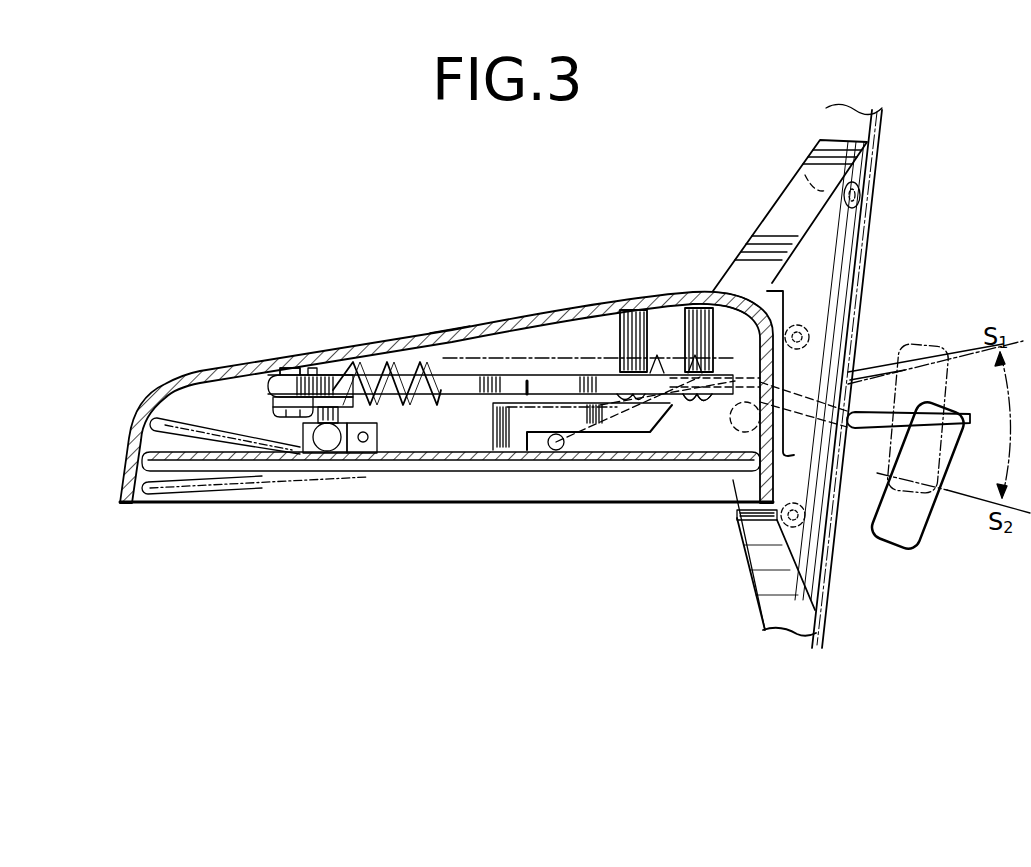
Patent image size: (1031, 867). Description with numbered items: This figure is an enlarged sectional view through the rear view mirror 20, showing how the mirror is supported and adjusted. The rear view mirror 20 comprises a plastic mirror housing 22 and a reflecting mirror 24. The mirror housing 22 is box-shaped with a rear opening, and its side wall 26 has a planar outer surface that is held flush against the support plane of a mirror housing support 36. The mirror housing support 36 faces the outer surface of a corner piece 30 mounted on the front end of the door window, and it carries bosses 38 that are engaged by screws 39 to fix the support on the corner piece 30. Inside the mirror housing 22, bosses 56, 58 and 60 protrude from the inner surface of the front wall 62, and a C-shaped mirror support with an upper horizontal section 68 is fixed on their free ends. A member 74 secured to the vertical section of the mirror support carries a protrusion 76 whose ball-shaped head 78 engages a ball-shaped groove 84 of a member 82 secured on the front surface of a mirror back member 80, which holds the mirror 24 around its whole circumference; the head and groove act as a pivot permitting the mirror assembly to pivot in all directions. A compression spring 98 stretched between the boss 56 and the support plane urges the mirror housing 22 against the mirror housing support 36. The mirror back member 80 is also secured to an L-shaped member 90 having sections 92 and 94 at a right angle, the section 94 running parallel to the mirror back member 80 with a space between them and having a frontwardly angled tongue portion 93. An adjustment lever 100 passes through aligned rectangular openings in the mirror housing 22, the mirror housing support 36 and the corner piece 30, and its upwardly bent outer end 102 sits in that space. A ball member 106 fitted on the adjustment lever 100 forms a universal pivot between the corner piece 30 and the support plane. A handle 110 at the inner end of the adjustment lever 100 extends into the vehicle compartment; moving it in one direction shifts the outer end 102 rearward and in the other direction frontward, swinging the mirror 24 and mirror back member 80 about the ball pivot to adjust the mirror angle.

The rear view mirror 20 is at (682, 281).
The mirror housing 22 is at (557, 305).
The reflecting mirror 24 is at (472, 470).
The side wall 26 is at (800, 452).
The corner piece 30 is at (863, 120).
The mirror housing support 36 is at (787, 203).
The bosses 38 is at (800, 163).
The screws 39 is at (860, 197).
The boss 56 is at (293, 368).
The boss 58 is at (700, 296).
The boss 60 is at (630, 330).
The front wall 62 is at (463, 328).
The upper horizontal section 68 is at (435, 380).
The member 74 is at (320, 413).
The protrusion 76 is at (340, 413).
The ball-shaped head 78 is at (328, 440).
The mirror back member 80 is at (463, 452).
The member 82 is at (372, 448).
The ball-shaped groove 84 is at (335, 447).
The member 90 is at (527, 381).
The section 92 is at (500, 430).
The tongue portion 93 is at (653, 413).
The section 94 is at (572, 413).
The compression spring 98 is at (665, 330).
The adjustment lever 100 is at (858, 410).
The outer end 102 is at (558, 450).
The ball member 106 is at (720, 482).
The handle 110 is at (933, 343).